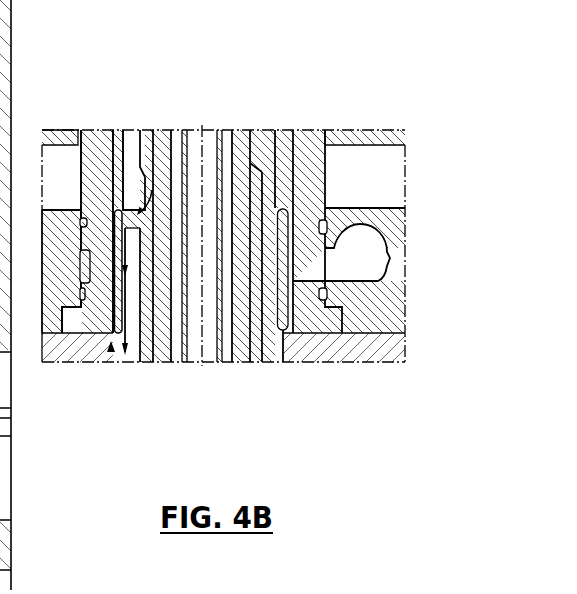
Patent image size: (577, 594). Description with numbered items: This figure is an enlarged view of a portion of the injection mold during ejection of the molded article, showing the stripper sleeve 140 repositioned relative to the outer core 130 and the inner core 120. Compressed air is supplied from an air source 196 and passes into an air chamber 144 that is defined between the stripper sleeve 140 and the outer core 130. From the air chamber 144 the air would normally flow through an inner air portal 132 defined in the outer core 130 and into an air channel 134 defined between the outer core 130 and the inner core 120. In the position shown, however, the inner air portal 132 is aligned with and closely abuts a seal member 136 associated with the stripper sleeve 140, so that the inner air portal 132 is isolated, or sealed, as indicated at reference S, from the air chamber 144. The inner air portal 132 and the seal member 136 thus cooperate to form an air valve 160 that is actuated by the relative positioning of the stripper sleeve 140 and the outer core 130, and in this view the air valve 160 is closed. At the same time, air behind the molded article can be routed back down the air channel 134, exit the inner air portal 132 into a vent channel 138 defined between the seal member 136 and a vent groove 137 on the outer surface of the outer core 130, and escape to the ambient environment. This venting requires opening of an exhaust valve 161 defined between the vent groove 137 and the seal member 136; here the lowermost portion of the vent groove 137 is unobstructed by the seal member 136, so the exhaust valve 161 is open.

The inner core 120 is at (163, 138).
The outer core 130 is at (137, 137).
The inner air portal 132 is at (186, 255).
The air channel 134 is at (147, 318).
The seal member 136 is at (123, 210).
The vent groove 137 is at (186, 262).
The vent channel 138 is at (127, 345).
The stripper sleeve 140 is at (83, 347).
The air chamber 144 is at (118, 205).
The air valve 160 is at (127, 208).
The exhaust valve 161 is at (111, 346).
The air source 196 is at (363, 248).
The seal S is at (121, 208).